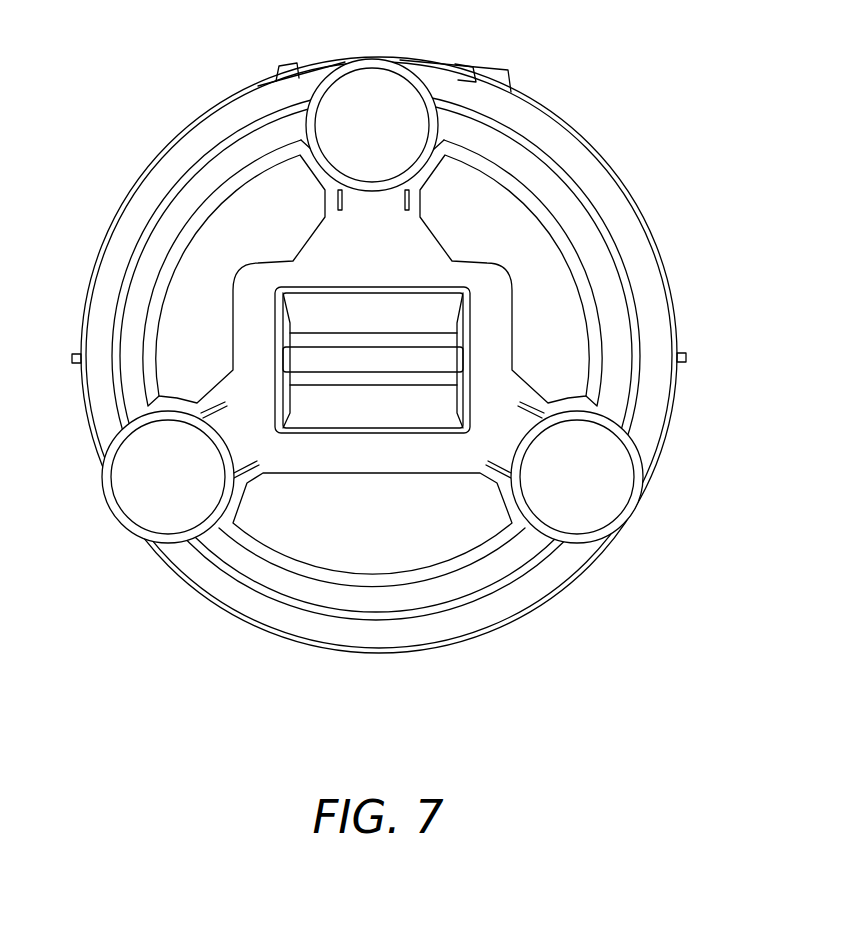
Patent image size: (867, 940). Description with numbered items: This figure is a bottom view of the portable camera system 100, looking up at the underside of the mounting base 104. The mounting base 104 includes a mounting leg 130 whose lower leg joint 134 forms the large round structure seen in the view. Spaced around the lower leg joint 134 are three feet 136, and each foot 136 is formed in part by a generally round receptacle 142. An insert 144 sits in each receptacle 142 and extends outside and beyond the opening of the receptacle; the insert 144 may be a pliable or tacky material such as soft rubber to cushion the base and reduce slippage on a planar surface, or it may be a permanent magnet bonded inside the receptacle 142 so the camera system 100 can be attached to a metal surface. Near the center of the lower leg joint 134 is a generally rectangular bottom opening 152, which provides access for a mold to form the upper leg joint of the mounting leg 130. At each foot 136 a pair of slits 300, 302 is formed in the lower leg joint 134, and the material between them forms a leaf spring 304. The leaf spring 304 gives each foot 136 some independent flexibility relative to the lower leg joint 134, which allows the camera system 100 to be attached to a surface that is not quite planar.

The camera system 100 is at (207, 643).
The mounting base 104 is at (206, 157).
The mounting leg 130 is at (182, 242).
The lower leg joint 134 is at (157, 287).
The foot 136 is at (568, 543).
The receptacle 142 is at (156, 498).
The insert 144 is at (181, 489).
The bottom opening 152 is at (418, 292).
The slit 300 is at (531, 407).
The slit 302 is at (493, 473).
The leaf spring 304 is at (503, 443).